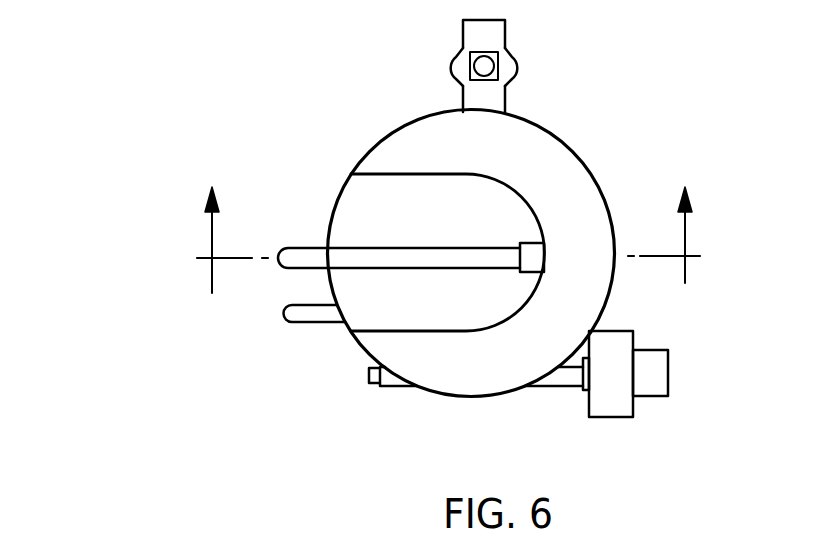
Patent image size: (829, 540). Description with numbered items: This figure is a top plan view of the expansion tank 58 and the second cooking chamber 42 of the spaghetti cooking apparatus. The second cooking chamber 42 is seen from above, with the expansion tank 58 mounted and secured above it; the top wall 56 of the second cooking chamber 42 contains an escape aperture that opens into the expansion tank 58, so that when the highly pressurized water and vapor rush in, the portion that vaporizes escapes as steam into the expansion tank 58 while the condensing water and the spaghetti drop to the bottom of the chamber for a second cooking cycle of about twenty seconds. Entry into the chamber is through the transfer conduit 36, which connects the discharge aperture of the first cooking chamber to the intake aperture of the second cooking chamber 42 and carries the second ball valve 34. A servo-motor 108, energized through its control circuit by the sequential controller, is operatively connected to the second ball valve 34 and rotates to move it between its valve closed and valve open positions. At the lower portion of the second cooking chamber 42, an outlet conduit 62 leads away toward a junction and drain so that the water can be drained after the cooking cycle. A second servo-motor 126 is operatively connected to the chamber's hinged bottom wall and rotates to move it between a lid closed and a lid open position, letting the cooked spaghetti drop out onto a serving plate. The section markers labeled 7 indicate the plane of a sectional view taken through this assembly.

The second ball valve 34 is at (513, 60).
The transfer conduit 36 is at (507, 96).
The servo-motor 108 is at (475, 63).
The second cooking chamber 42 is at (343, 190).
The expansion tank 58 is at (473, 253).
The top wall 56 is at (360, 317).
The outlet conduit 62 is at (287, 320).
The servo-motor 126 is at (668, 372).
The section line 7- 7 is at (448, 240).